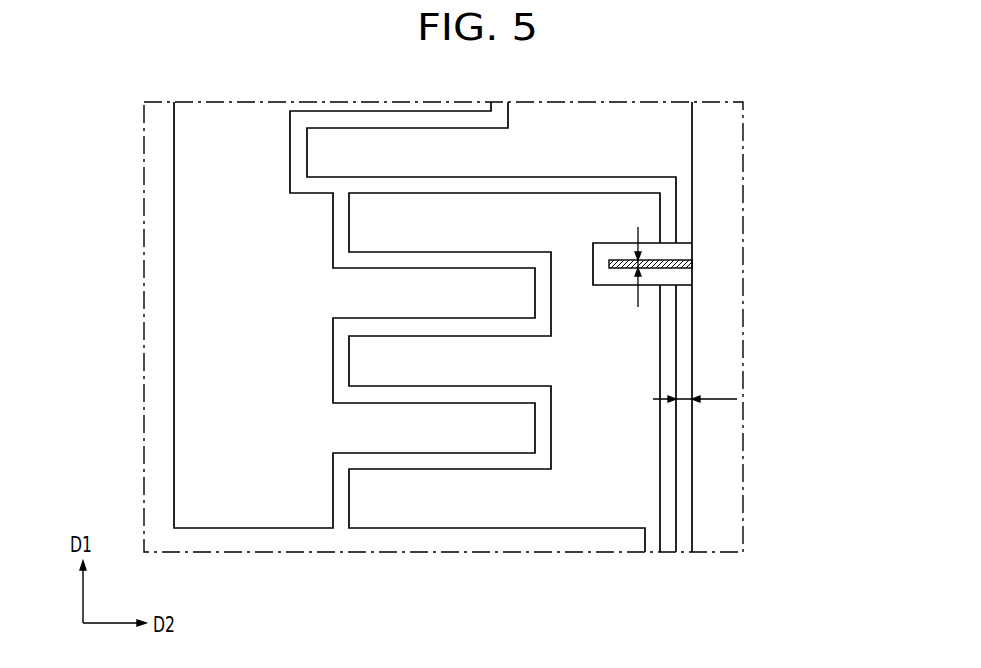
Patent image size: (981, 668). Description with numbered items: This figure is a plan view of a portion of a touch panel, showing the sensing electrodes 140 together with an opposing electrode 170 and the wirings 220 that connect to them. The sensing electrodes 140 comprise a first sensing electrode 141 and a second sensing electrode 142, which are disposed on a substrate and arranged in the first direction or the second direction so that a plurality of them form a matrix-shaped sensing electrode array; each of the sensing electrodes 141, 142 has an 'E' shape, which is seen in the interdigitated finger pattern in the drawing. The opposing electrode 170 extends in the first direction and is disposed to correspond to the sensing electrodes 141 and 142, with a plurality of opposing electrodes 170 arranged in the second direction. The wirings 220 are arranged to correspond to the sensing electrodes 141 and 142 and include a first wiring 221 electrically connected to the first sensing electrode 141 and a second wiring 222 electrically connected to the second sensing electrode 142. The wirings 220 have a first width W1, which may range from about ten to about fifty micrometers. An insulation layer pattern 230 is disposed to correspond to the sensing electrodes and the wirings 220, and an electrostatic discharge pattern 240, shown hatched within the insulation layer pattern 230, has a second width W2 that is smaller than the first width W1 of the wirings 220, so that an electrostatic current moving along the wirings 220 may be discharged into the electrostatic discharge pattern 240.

The opposing electrode 170 is at (186, 245).
The sensing electrodes 140 is at (812, 132).
The first sensing electrode 141 is at (668, 142).
The second sensing electrode 142 is at (645, 208).
The insulation layer pattern 230 is at (598, 245).
The electrostatic discharge pattern 240 is at (622, 266).
The wirings 220 is at (712, 613).
The first wiring 221 is at (687, 543).
The second wiring 222 is at (652, 543).
The first width W1 is at (695, 387).
The second width W2 is at (636, 282).